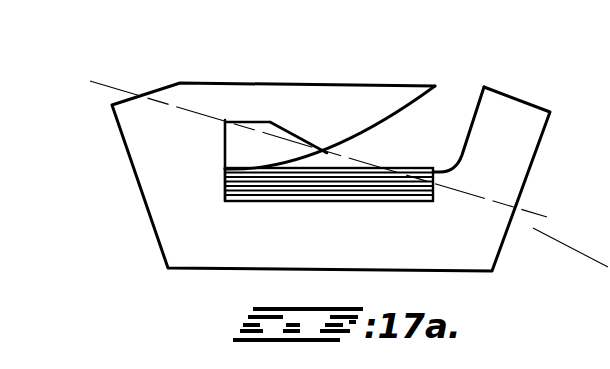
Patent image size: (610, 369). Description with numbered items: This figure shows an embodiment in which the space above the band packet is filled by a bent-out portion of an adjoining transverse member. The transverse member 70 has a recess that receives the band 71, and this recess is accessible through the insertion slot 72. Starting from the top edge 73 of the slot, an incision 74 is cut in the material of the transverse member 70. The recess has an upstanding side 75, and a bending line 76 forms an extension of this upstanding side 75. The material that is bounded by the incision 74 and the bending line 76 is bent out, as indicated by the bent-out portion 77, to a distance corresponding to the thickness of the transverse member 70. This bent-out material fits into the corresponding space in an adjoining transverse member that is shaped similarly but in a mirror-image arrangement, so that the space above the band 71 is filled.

The transverse member 70 is at (517, 163).
The band 71 is at (287, 200).
The insertion slot 72 is at (458, 108).
The top edge 73 is at (382, 128).
The incision 74 is at (297, 132).
The upstanding side 75 is at (222, 186).
The bending line 76 is at (223, 149).
The bent-out portion 77 is at (270, 153).